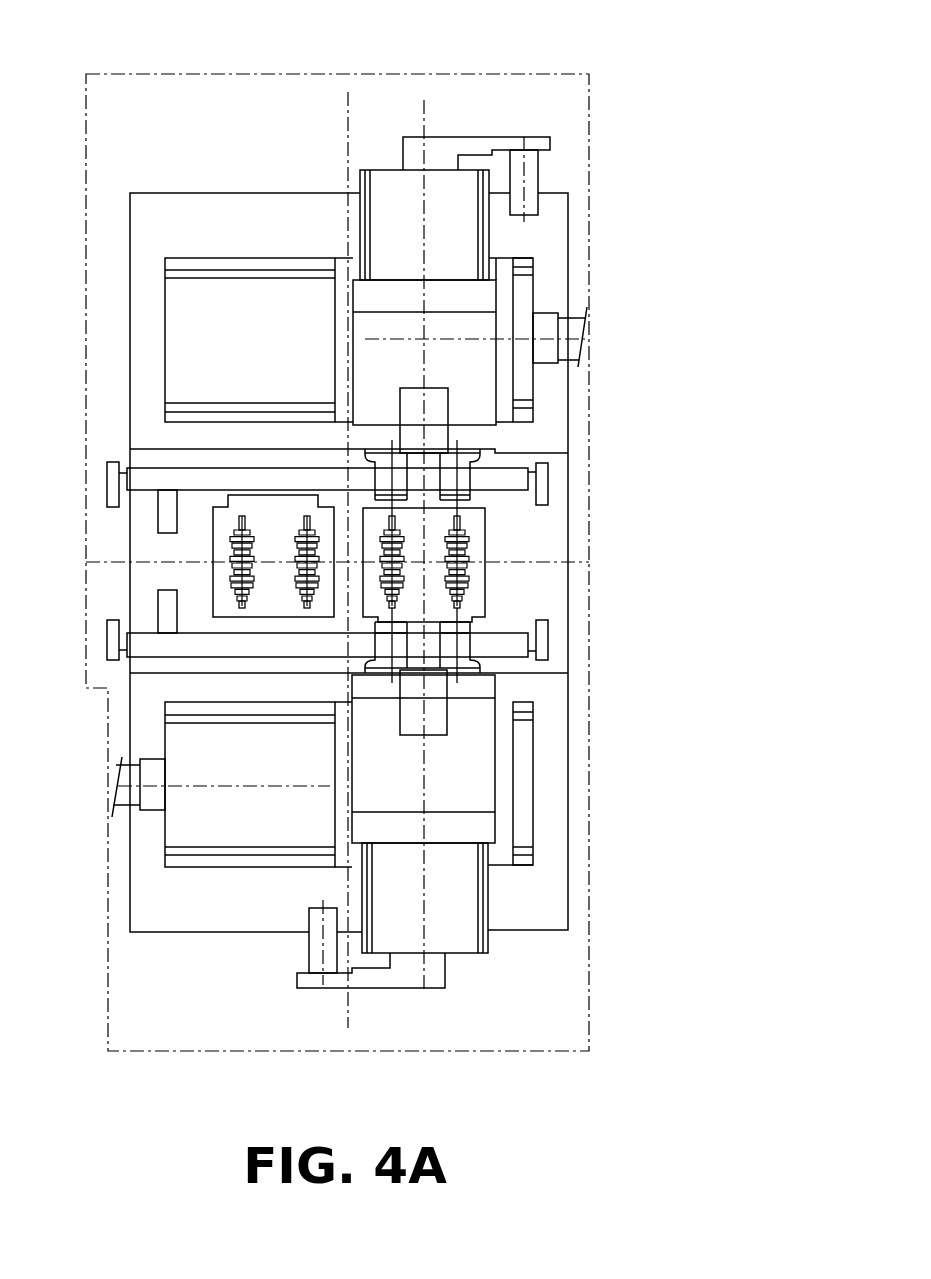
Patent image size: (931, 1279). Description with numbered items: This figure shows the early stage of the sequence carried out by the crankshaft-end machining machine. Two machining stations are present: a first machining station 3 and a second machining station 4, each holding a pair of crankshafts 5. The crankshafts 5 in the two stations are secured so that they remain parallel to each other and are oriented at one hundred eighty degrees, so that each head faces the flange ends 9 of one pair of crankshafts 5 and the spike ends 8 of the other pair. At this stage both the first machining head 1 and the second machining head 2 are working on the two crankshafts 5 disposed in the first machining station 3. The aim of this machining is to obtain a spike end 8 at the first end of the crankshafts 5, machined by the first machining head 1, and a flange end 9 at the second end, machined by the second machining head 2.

The first machining head 1 is at (452, 927).
The second machining head 2 is at (456, 191).
The first machining station 3 is at (485, 535).
The second machining station 4 is at (213, 575).
The crankshaft 5 is at (293, 543).
The spike end 8 is at (304, 513).
The flange end 9 is at (305, 600).